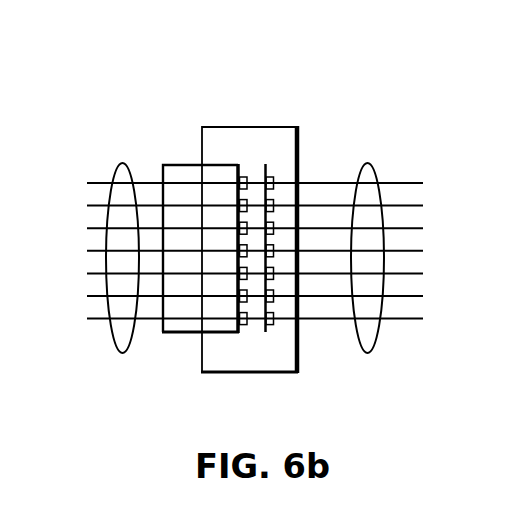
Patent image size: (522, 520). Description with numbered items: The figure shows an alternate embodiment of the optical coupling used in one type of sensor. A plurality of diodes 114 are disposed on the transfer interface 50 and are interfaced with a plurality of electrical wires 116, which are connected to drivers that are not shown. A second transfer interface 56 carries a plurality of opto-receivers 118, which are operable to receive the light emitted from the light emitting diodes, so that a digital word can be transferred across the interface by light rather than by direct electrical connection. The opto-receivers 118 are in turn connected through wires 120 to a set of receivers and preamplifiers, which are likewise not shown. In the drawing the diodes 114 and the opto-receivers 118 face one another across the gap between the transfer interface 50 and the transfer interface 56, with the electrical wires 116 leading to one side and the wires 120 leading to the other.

The transfer interface 50 is at (185, 170).
The transfer interface 56 is at (238, 358).
The diodes 114 is at (245, 222).
The electrical wires 116 is at (122, 352).
The opto-receivers 118 is at (272, 267).
The wires 120 is at (367, 352).